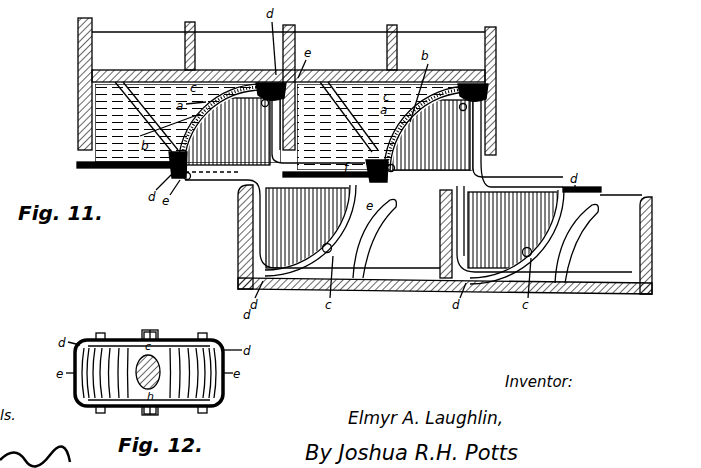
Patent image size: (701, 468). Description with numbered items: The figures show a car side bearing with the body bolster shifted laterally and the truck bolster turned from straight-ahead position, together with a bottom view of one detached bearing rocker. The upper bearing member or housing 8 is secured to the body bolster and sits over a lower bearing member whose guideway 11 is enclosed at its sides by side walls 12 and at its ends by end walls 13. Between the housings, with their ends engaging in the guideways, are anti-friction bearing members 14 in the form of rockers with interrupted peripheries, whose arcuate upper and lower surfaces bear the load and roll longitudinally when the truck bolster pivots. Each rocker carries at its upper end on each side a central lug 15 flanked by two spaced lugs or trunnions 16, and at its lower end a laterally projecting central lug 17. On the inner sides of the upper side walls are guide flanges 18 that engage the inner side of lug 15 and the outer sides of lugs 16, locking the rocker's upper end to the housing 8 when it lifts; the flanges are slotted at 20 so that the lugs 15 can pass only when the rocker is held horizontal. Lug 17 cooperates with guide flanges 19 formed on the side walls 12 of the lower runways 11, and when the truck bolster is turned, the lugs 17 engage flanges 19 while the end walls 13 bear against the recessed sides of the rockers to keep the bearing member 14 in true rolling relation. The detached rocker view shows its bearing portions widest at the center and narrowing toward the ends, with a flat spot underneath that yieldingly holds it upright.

In FIG. 11, the upper bearing member or housing 8 is at (222, 72).
In FIG. 11, the guideway 11 is at (422, 271).
In FIG. 11, the side wall 12 is at (77, 165).
In FIG. 11, the end wall 13 is at (78, 105).
In FIG. 11, the anti-friction bearing member 14 is at (245, 190).
In FIG. 12, the anti-friction bearing member 14 is at (125, 378).
In FIG. 11, the central lug 15 is at (226, 172).
In FIG. 12, the central lug 15 is at (160, 333).
In FIG. 11, the spaced lug or trunnion 16 is at (266, 82).
In FIG. 12, the spaced lug or trunnion 16 is at (101, 333).
In FIG. 11, the central lug 17 is at (325, 253).
In FIG. 12, the central lug 17 is at (150, 331).
In FIG. 11, the guide flange 18 is at (115, 78).
In FIG. 11, the guide flange 19 is at (383, 232).
In FIG. 11, the slot 20 is at (500, 162).